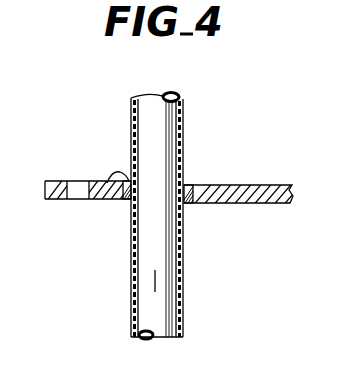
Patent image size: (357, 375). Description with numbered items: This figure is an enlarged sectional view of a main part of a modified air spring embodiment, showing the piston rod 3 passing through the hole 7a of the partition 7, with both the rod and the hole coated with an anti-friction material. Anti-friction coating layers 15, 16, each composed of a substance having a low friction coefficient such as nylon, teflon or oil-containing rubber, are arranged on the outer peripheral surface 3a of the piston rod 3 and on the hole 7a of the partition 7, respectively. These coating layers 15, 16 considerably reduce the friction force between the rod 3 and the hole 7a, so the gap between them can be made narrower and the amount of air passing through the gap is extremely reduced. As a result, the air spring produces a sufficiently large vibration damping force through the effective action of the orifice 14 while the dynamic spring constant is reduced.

The piston rod 3 is at (160, 313).
The outer peripheral surface of the piston rod 3a is at (183, 278).
The anti-friction coating layer 15 is at (183, 237).
The partition 7 is at (257, 185).
The hole of the partition 7a is at (103, 203).
The orifice 14 is at (68, 203).
The anti-friction coating layer 16 is at (188, 185).